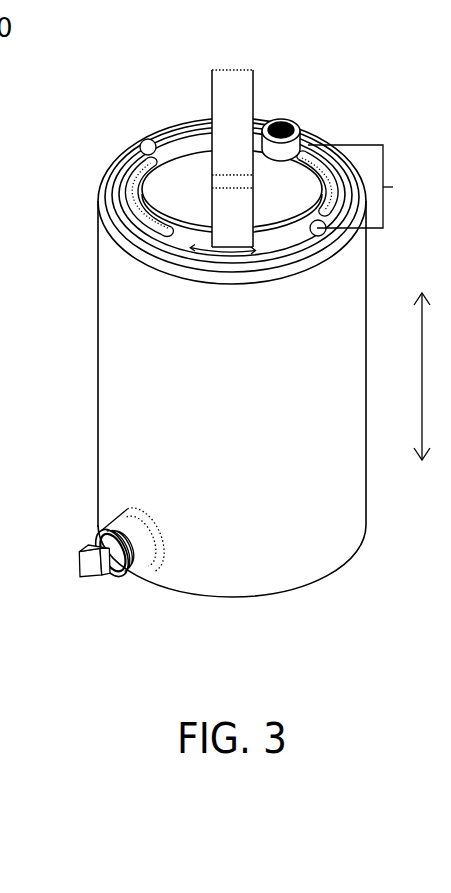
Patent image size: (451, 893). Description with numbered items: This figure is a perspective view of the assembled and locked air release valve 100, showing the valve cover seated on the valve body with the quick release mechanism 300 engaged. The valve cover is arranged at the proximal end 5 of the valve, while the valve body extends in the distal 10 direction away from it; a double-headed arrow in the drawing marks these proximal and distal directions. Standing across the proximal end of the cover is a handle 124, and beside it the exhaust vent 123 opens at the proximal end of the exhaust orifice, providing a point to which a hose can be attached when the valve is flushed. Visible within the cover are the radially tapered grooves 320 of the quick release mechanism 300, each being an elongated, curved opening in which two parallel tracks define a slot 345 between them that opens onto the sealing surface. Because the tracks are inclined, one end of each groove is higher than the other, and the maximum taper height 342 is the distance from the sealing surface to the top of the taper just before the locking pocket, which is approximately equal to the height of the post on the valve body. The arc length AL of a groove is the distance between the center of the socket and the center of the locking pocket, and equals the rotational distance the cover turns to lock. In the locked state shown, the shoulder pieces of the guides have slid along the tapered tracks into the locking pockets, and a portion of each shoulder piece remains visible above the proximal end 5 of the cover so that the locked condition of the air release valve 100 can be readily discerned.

The air release valve 100 is at (183, 399).
The quick release mechanism 300 is at (183, 175).
The radially tapered groove 320 is at (112, 190).
The maximum taper height 342 is at (102, 110).
The slot 345 is at (122, 201).
The handle 124 is at (274, 132).
The exhaust vent 123 is at (320, 111).
The arc length AL is at (373, 186).
The proximal end 5 is at (423, 356).
The distal 10 is at (424, 488).